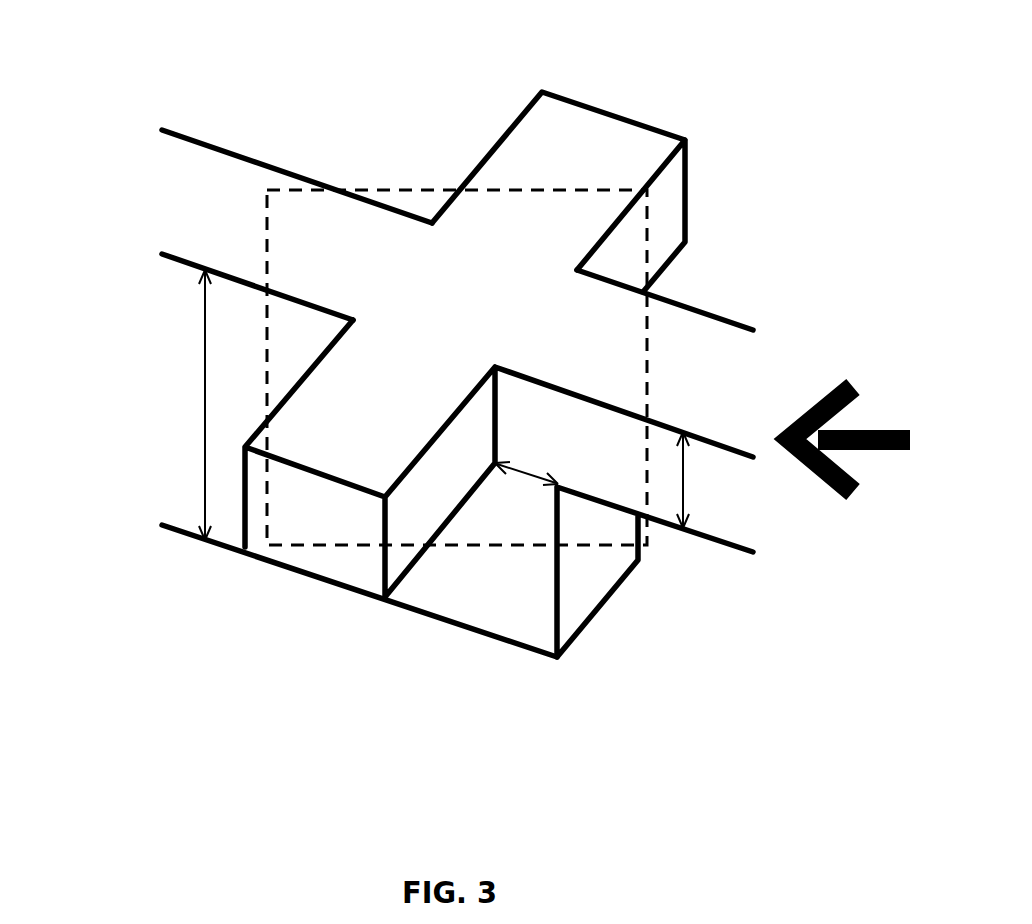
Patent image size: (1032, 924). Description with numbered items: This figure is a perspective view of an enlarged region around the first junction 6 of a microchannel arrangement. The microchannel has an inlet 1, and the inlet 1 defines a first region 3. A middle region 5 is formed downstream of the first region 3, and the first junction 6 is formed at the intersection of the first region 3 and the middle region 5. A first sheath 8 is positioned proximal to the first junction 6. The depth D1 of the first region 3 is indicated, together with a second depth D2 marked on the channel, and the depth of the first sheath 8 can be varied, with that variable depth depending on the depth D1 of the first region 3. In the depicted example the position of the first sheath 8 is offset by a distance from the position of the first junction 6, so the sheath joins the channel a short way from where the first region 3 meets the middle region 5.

The inlet 1 is at (753, 485).
The first region 3 is at (707, 337).
The middle region 5 is at (193, 212).
The first junction 6 is at (398, 190).
The first sheath 8 is at (620, 120).
The depth of the first region D1 is at (685, 497).
The second gap dimension D2 is at (205, 452).